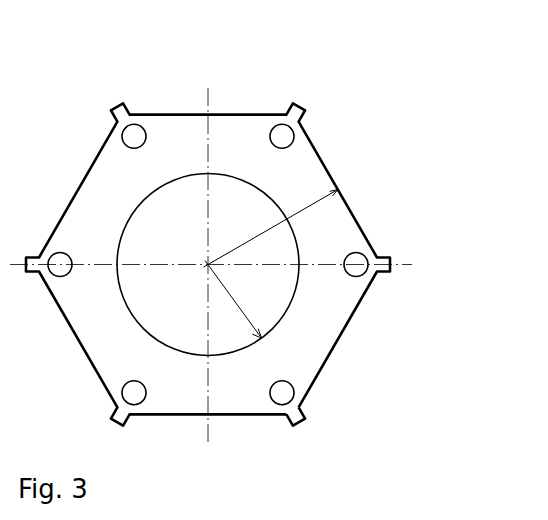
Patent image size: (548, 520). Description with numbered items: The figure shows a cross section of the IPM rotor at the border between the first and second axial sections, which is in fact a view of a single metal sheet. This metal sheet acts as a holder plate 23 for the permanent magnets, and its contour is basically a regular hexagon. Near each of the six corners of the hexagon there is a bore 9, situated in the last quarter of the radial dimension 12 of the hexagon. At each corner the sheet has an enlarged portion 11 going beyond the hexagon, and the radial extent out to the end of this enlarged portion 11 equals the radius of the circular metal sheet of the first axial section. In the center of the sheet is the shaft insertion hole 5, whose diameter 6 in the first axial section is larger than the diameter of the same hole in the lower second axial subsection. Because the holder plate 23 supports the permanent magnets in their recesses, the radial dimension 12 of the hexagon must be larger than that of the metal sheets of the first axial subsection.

The holder plate 23 is at (183, 113).
The bore 9 is at (298, 118).
The radial dimension of the hexagon 12 is at (271, 229).
The shaft insertion hole 5 is at (208, 265).
The diameter of the shaft insertion hole 6 is at (233, 300).
The enlarged portion 11 is at (304, 416).